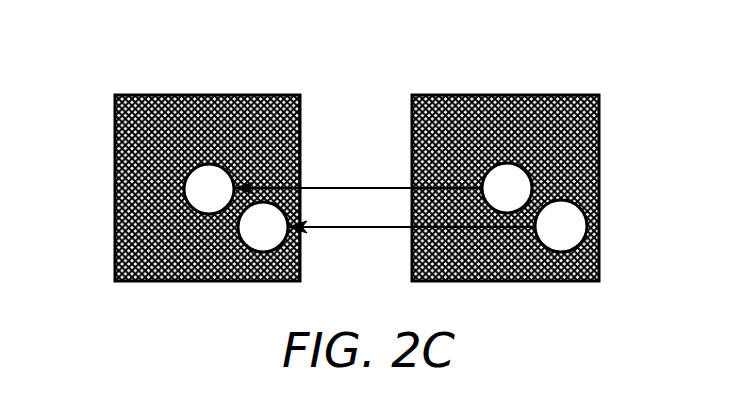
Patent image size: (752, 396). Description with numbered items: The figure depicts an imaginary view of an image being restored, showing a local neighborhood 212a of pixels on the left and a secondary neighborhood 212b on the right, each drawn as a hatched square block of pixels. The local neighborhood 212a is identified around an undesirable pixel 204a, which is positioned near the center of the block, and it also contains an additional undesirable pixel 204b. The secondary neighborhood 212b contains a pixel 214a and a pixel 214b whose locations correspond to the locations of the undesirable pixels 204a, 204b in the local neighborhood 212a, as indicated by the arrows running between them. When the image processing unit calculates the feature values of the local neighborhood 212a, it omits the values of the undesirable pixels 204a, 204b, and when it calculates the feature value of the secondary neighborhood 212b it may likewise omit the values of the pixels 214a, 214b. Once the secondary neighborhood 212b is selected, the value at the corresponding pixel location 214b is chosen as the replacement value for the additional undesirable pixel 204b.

The local neighborhood 212a is at (172, 95).
The secondary neighborhood 212b is at (468, 95).
The undesirable pixel 204a is at (184, 190).
The additional undesirable pixel 204b is at (240, 233).
The pixel corresponding to undesirable pixel 214a is at (532, 189).
The corresponding pixel location 214b is at (587, 225).